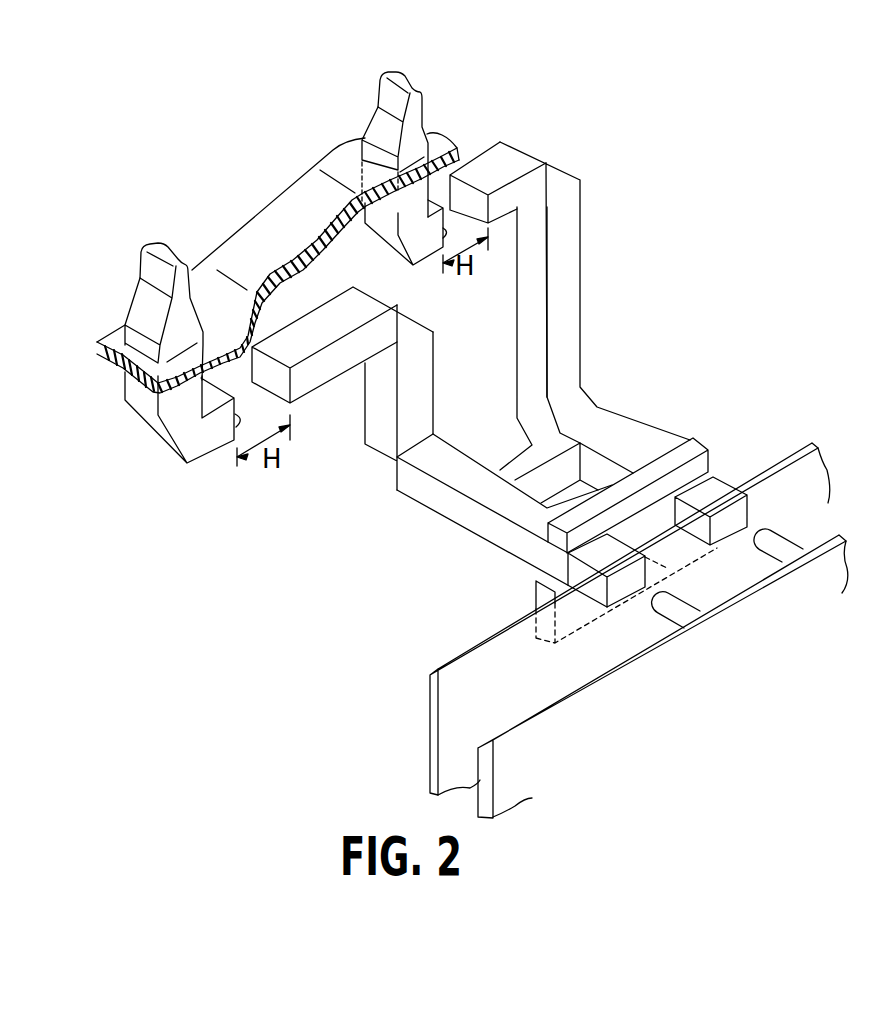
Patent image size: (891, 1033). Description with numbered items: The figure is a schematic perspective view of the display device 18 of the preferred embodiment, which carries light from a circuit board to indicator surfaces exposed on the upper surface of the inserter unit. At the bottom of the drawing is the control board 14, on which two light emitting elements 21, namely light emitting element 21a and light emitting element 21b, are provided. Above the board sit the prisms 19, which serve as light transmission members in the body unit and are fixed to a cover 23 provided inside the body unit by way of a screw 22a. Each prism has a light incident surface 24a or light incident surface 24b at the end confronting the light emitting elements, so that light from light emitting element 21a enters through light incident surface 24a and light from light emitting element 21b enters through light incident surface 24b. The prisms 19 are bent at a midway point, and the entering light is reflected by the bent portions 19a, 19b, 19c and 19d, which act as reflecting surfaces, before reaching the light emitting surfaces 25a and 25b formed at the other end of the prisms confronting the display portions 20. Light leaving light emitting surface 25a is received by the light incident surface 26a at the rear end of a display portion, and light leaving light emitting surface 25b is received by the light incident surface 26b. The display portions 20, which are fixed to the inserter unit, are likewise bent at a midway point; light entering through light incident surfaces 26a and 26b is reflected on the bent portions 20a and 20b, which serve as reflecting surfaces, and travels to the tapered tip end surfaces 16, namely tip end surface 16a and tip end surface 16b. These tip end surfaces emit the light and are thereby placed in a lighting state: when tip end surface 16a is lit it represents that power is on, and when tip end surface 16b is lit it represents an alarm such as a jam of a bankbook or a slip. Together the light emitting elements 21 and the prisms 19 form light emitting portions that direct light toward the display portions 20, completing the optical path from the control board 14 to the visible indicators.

The control board 14 is at (843, 565).
The tip end surfaces 16 is at (263, 113).
The tip end surface 16a is at (160, 257).
The tip end surface 16b is at (383, 75).
The display device 18 is at (604, 241).
The prisms 19 is at (582, 346).
The bent portion 19a is at (378, 455).
The bent portion 19b is at (420, 322).
The bent portion 19c is at (528, 442).
The bent portion 19d is at (578, 177).
The display portions 20 is at (426, 96).
The bent portion 20a is at (158, 436).
The bent portion 20b is at (380, 237).
The light emitting elements 21 is at (733, 616).
The light emitting element 21a is at (683, 613).
The light emitting element 21b is at (773, 548).
The screw 22a is at (648, 557).
The cover 23 is at (778, 460).
The light incident surface 24a is at (620, 590).
The light incident surface 24b is at (725, 515).
The light emitting surface 25a is at (272, 372).
The light emitting surface 25b is at (482, 188).
The light incident surface 26a is at (222, 442).
The light incident surface 26b is at (462, 200).